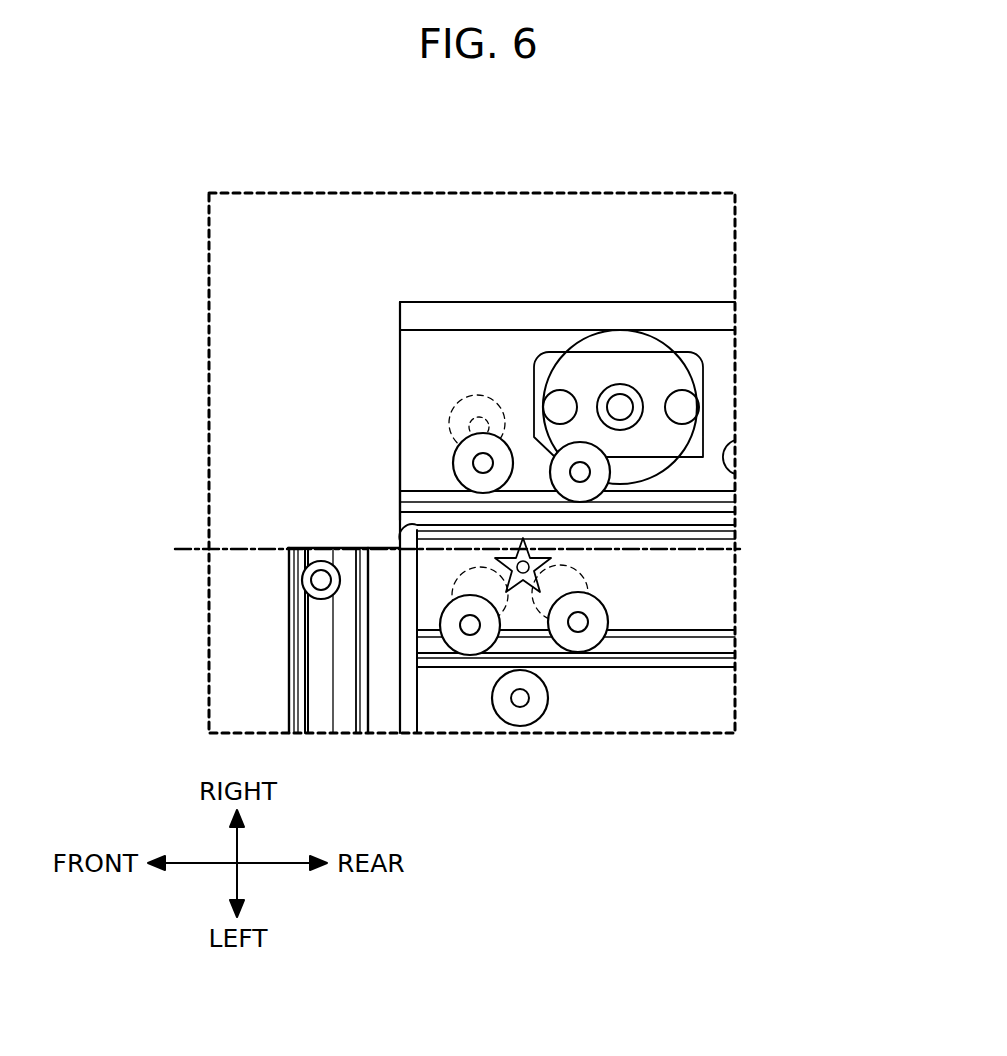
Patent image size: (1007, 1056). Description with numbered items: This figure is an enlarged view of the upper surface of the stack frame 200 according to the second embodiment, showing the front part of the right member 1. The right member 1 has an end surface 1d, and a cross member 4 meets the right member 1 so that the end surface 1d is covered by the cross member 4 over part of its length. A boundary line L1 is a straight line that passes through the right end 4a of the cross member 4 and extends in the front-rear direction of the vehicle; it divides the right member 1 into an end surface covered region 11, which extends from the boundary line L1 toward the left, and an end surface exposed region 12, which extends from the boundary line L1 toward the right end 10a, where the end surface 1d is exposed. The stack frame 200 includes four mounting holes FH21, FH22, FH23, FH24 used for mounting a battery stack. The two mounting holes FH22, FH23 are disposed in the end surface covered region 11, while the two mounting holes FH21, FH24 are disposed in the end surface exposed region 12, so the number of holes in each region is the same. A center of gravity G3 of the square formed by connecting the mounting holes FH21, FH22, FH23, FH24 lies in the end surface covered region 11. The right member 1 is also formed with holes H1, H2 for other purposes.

The stack frame 200 is at (216, 235).
The right member 1 is at (601, 302).
The right end 10a is at (426, 302).
The end surface 1d is at (398, 479).
The hole H1 is at (620, 408).
The mounting hole FH21 is at (494, 417).
The end surface exposed region 12 is at (521, 484).
The mounting hole FH24 is at (590, 473).
The center of gravity G3 is at (549, 560).
The end surface covered region 11 is at (619, 591).
The mounting hole FH22 is at (457, 637).
The mounting hole FH23 is at (590, 632).
The hole H2 is at (520, 702).
The cross member 4 is at (288, 593).
The right end 4a is at (321, 548).
The boundary line L1 is at (175, 549).